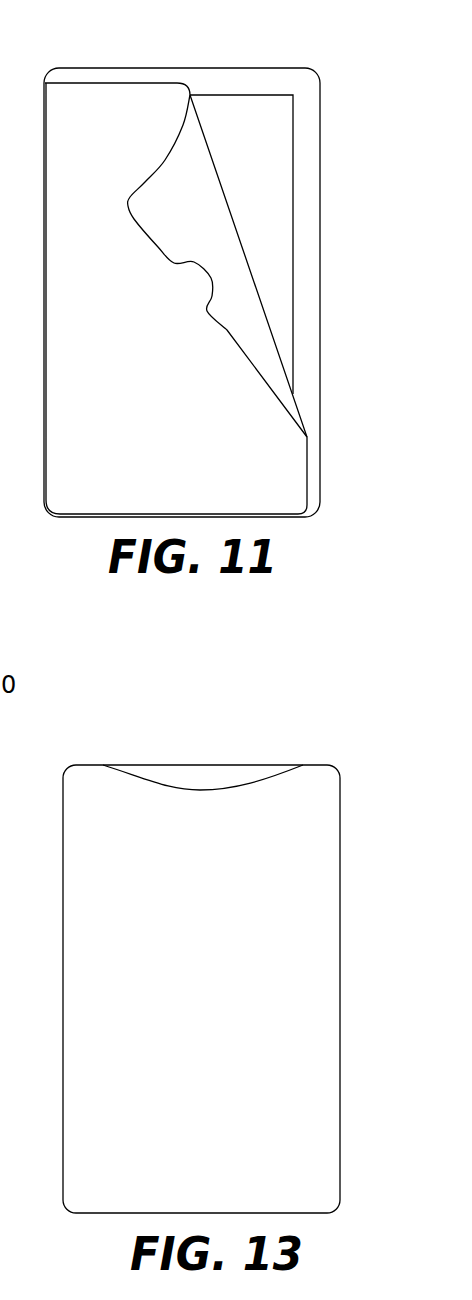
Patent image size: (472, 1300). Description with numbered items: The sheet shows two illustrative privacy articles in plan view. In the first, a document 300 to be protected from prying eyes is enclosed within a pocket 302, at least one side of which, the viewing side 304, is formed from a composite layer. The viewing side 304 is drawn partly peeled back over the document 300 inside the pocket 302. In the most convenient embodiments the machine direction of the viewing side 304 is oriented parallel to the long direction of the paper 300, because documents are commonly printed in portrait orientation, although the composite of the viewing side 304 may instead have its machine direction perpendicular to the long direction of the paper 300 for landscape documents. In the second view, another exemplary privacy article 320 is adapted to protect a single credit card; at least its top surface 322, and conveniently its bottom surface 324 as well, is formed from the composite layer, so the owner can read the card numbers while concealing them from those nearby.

In FIG. 11, the document 300 is at (285, 113).
In FIG. 11, the pocket 302 is at (265, 77).
In FIG. 11, the viewing side 304 is at (100, 88).
In FIG. 13, the privacy article 320 is at (318, 738).
In FIG. 13, the top surface 322 is at (332, 920).
In FIG. 13, the bottom surface 324 is at (200, 778).